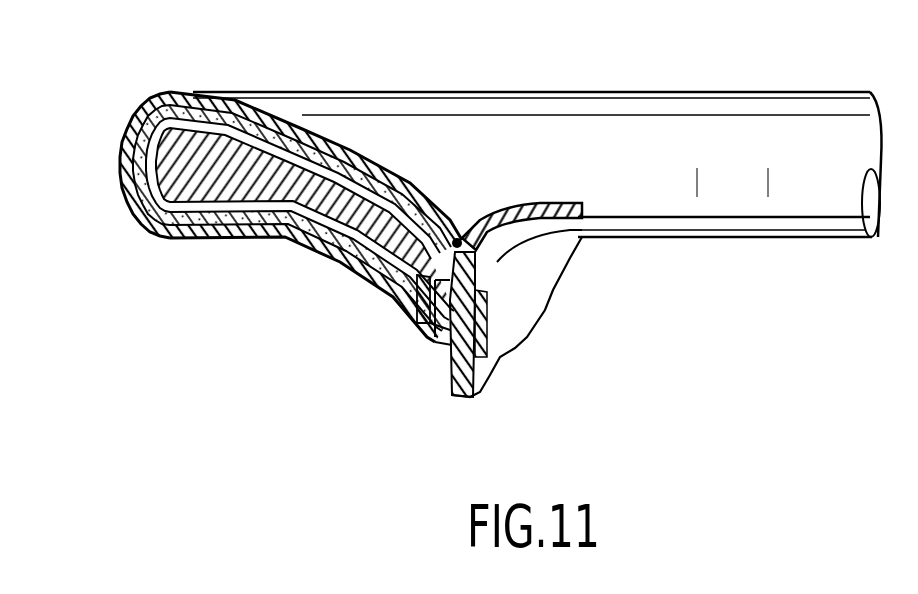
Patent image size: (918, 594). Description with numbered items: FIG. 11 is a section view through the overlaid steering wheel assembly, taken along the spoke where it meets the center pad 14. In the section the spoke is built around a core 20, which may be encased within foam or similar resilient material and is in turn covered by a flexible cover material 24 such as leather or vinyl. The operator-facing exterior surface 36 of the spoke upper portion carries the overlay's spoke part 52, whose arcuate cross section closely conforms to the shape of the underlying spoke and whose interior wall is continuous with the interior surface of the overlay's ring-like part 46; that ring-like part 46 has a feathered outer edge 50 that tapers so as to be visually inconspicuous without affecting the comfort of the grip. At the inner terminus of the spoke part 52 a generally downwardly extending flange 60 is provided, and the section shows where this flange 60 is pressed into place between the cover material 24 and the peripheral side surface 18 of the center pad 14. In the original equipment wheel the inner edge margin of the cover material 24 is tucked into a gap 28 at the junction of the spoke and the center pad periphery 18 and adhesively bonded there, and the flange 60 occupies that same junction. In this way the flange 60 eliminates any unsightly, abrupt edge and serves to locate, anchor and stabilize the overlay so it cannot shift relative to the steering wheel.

The center pad 14 is at (540, 193).
The peripheral side surface of the center pad 18 is at (443, 355).
The core 20 is at (323, 263).
The cover material 24 is at (197, 240).
The gap 28 is at (470, 215).
The exterior surface of the spoke upper portion 36 is at (263, 107).
The ring-like part 46 is at (153, 100).
The outer edge 50 is at (121, 163).
The spoke part 52 is at (347, 147).
The flange 60 is at (438, 342).